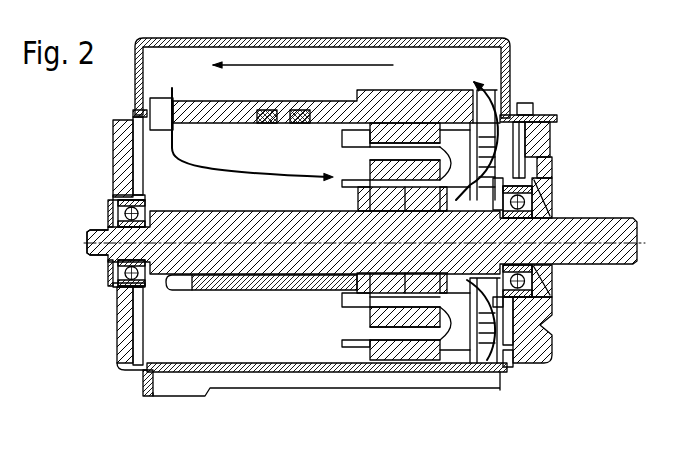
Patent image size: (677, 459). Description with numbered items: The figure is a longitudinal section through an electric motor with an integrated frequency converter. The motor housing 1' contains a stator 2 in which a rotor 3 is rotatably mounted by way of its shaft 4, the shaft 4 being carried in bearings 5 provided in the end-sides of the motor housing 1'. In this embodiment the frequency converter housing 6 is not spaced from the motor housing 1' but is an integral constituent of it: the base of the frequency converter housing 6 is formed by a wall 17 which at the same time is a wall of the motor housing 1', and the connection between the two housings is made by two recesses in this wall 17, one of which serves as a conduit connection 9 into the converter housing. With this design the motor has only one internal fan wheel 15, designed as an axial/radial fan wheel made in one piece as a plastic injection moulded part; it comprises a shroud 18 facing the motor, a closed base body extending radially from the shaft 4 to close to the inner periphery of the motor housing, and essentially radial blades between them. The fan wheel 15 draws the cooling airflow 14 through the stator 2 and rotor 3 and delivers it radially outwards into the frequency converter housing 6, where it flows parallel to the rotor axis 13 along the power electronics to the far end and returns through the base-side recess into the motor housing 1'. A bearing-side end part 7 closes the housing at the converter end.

The motor housing 1' is at (325, 399).
The stator 2 is at (423, 355).
The rotor 3 is at (383, 292).
The shaft 4 is at (588, 237).
The bearings 5 is at (116, 284).
The frequency converter housing 6 is at (508, 58).
The end cap 7 is at (520, 117).
The conduit connection 9 is at (73, 326).
The axis 13 is at (88, 233).
The cooling airflow 14 is at (253, 67).
The internal fan wheel 15 is at (490, 345).
The wall 17 is at (283, 124).
The shroud 18 is at (73, 155).